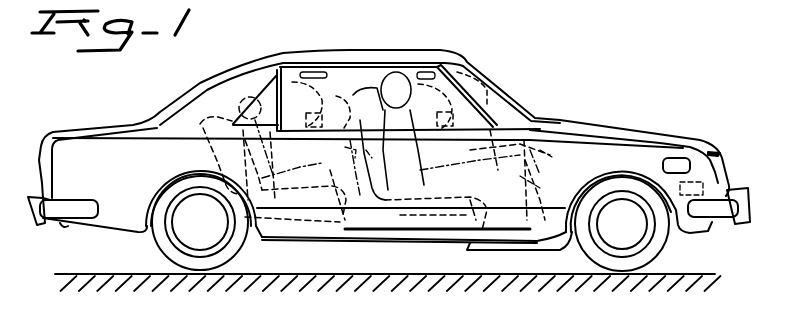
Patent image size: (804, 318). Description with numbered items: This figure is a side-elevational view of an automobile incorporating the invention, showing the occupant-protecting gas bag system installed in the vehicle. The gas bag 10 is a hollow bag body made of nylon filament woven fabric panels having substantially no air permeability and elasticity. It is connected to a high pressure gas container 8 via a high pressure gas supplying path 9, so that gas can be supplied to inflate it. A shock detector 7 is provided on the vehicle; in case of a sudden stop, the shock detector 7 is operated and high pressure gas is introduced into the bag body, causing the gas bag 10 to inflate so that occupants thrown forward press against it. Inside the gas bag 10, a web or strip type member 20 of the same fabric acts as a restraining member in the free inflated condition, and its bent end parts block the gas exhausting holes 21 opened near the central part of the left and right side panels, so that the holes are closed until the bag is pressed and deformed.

The shock detector 7 is at (703, 182).
The high pressure gas container 8 is at (370, 158).
The high pressure gas supplying path 9 is at (352, 151).
The gas bag 10 is at (308, 68).
The strip 20 is at (316, 107).
The gas exhausting holes 21 is at (336, 116).